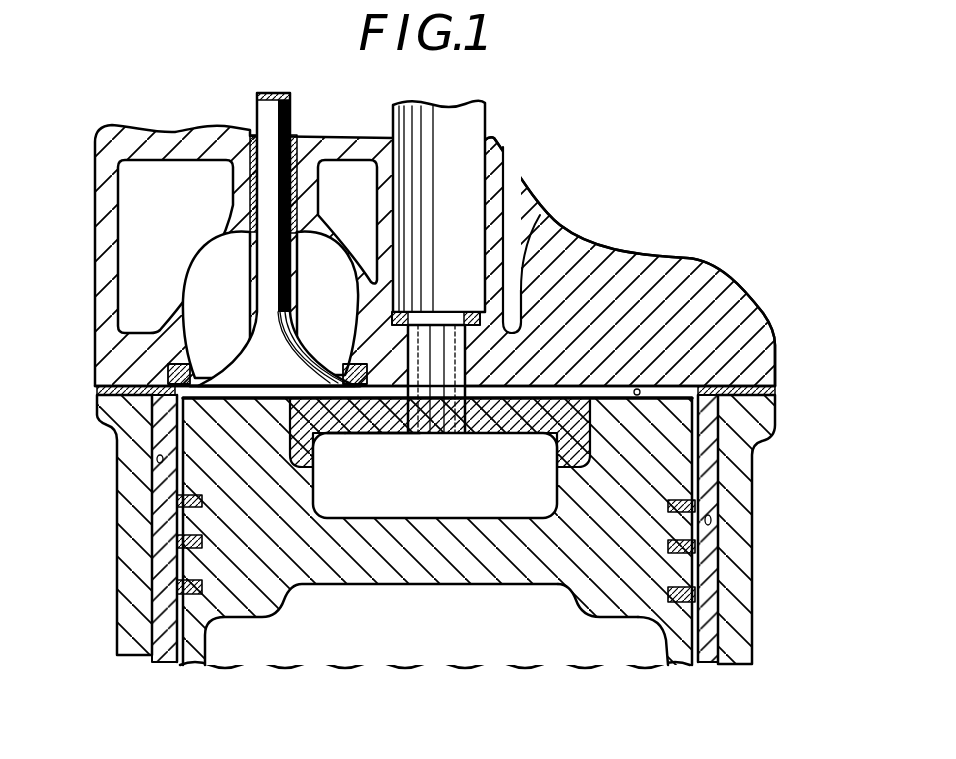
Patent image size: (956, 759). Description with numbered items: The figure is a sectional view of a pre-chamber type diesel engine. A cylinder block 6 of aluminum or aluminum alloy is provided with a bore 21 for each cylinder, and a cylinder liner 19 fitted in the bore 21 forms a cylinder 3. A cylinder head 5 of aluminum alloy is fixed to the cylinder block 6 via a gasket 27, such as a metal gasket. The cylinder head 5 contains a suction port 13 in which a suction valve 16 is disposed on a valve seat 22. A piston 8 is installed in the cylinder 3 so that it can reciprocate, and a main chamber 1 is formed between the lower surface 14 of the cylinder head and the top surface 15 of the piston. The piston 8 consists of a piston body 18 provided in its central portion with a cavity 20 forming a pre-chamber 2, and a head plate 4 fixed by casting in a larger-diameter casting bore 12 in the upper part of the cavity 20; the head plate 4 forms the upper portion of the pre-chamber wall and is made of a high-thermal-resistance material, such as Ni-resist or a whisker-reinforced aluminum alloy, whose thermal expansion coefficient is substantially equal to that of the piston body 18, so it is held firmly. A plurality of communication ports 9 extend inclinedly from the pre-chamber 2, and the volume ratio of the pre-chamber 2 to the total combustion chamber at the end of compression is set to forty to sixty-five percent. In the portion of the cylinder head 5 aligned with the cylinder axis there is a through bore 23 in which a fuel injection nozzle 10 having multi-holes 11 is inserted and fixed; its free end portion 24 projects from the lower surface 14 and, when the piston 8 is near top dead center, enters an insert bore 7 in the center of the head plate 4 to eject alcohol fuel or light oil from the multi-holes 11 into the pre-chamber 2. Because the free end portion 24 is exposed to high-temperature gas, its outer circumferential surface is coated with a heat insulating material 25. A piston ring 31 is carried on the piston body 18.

The main chamber 1 is at (357, 368).
The pre-chamber 2 is at (482, 513).
The cylinder 3 is at (720, 438).
The head plate 4 is at (328, 433).
The cylinder head 5 is at (620, 252).
The cylinder block 6 is at (132, 523).
The insert bore 7 is at (457, 442).
The piston 8 is at (460, 595).
The communication ports 9 is at (379, 430).
The fuel injection nozzle 10 is at (457, 123).
The multi-holes 11 is at (437, 451).
The casting bore 12 is at (557, 450).
The suction port 13 is at (223, 270).
The lower surface of the cylinder head 14 is at (640, 392).
The top surface of the piston 15 is at (490, 402).
The suction valve 16 is at (233, 365).
The piston body 18 is at (593, 513).
The cylinder liner 19 is at (163, 600).
The cavity 20 is at (326, 500).
The bore 21 is at (156, 459).
The valve seat 22 is at (168, 373).
The through bore 23 is at (438, 300).
The free end portion 24 is at (540, 215).
The heat insulating material 25 is at (511, 292).
The gasket 27 is at (735, 390).
The piston ring 31 is at (663, 553).